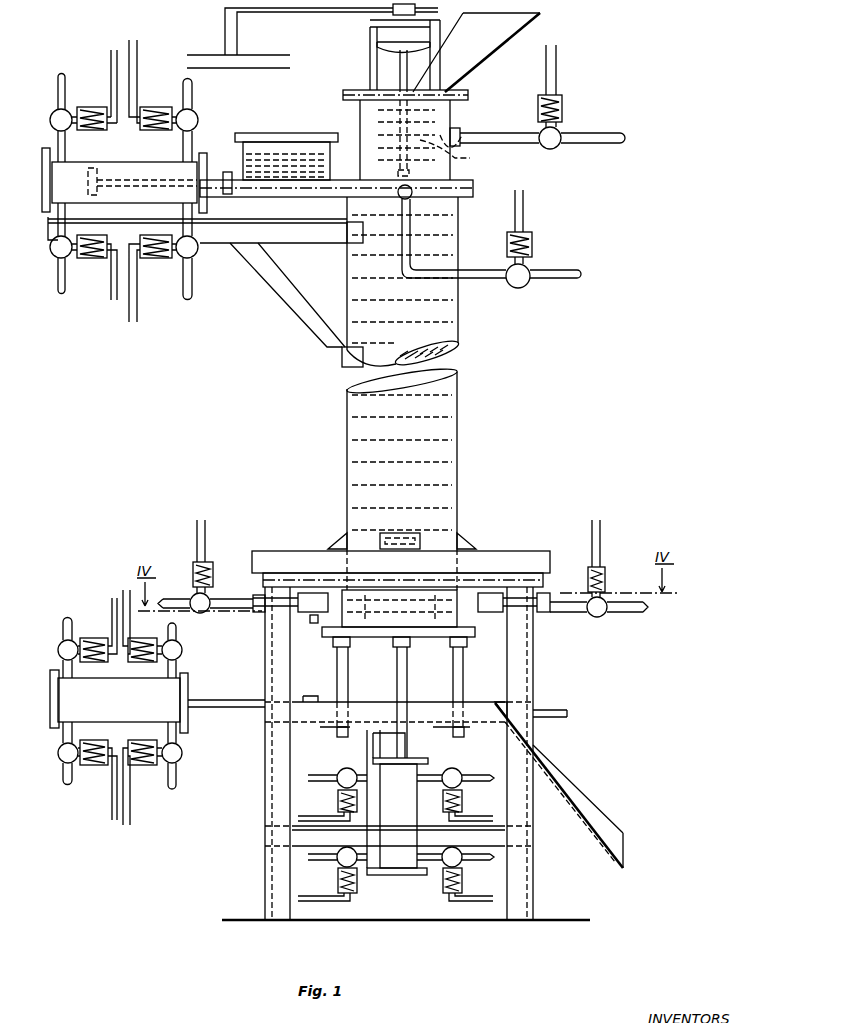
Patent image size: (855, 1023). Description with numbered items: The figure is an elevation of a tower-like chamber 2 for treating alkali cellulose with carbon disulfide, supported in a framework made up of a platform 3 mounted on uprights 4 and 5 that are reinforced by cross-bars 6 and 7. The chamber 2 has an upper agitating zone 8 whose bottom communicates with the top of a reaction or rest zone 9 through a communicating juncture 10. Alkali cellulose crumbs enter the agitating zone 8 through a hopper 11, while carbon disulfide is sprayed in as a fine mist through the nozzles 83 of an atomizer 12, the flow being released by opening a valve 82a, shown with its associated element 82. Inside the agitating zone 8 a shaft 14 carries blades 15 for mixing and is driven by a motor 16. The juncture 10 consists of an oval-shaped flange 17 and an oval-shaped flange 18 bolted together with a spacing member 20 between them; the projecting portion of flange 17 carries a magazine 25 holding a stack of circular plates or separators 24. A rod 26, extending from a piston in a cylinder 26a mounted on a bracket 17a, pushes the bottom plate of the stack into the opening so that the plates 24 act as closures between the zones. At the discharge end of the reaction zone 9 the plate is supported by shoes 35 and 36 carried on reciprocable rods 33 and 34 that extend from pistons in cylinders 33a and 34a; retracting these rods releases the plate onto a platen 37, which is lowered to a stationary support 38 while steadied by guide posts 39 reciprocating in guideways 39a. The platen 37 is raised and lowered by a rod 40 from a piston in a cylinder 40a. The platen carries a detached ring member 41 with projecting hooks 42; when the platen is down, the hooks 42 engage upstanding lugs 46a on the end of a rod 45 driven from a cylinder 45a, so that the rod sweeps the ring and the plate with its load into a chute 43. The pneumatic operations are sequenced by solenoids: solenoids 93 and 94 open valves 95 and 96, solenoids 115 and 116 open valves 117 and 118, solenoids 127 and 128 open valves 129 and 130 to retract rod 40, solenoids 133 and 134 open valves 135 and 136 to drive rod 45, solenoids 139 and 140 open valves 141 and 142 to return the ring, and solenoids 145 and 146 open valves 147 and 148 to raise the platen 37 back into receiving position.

The tower-like chamber 2 is at (277, 407).
The platform 3 is at (495, 553).
The upright 4 is at (265, 806).
The upright 5 is at (530, 656).
The cross-bar 6 is at (322, 578).
The cross-bar 7 is at (478, 830).
The agitating zone 8 is at (467, 104).
The reaction or rest zone 9 is at (459, 395).
The communicating juncture 10 is at (538, 180).
The hopper 11 is at (528, 15).
The atomizer 12 is at (462, 133).
The shaft 14 is at (405, 66).
The blades 15 is at (455, 153).
The motor 16 is at (392, 10).
The oval-shaped flange 17 is at (470, 186).
The bracket 17a is at (293, 313).
The oval-shaped flange 18 is at (473, 197).
The spacing member 20 is at (475, 192).
The circular plates or separators 24 is at (290, 162).
The magazine 25 is at (262, 134).
The rod 26 is at (212, 200).
The cylinder 26a is at (208, 182).
The reciprocable rod 33 is at (470, 612).
The cylinder 33a is at (556, 613).
The reciprocable rod 34 is at (308, 612).
The cylinder 34a is at (256, 610).
The shoe 35 is at (452, 600).
The shoe 36 is at (360, 583).
The platen 37 is at (430, 647).
The stationary support 38 is at (400, 768).
The guide posts 39 is at (350, 690).
The guideways 39a is at (335, 745).
The rod 40 is at (402, 668).
The cylinder 40a is at (392, 872).
The ring member 41 is at (373, 630).
The projecting hooks 42 is at (313, 624).
The chute 43 is at (604, 826).
The rod 45 is at (225, 700).
The cylinder 45a is at (184, 692).
The upstanding lugs 46a is at (310, 695).
The filter 82 is at (564, 108).
The valve 82a is at (563, 130).
The nozzles 83 is at (452, 134).
The solenoid 93 is at (92, 106).
The solenoid 94 is at (155, 259).
The valve 95 is at (58, 110).
The valve 96 is at (198, 248).
The solenoid 115 is at (158, 106).
The solenoid 116 is at (85, 259).
The valve 117 is at (180, 131).
The valve 118 is at (58, 262).
The solenoid 127 is at (350, 885).
The solenoid 128 is at (444, 805).
The valve 129 is at (338, 865).
The valve 130 is at (452, 768).
The solenoid 133 is at (93, 637).
The solenoid 134 is at (140, 767).
The valve 135 is at (62, 642).
The valve 136 is at (184, 754).
The solenoid 139 is at (146, 637).
The solenoid 140 is at (93, 766).
The valve 141 is at (183, 651).
The valve 142 is at (62, 765).
The solenoid 145 is at (443, 884).
The solenoid 146 is at (338, 800).
The valve 147 is at (466, 864).
The valve 148 is at (348, 768).